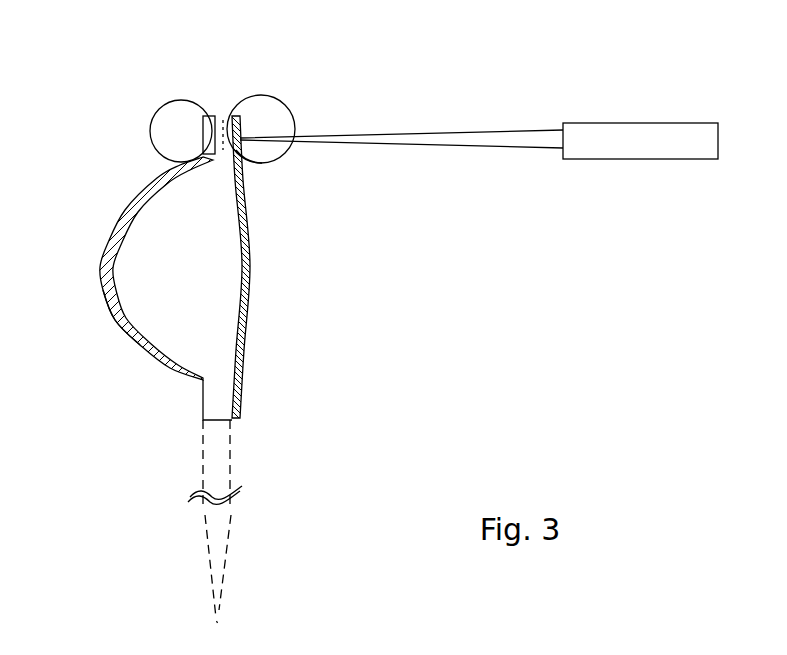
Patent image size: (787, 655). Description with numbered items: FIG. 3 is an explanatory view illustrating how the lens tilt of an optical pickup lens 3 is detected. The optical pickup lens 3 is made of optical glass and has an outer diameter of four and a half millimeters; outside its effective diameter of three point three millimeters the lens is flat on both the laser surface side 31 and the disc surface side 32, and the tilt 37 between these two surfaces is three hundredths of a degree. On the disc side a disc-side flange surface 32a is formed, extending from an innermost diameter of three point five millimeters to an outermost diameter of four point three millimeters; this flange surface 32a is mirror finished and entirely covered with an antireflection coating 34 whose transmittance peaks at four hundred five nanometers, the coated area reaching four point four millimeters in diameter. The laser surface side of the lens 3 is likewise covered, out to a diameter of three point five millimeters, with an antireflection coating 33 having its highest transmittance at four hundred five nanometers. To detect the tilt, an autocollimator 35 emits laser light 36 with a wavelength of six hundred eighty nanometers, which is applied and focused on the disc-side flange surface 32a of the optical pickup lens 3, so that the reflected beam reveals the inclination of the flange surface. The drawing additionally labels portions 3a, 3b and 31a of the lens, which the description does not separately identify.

The optical pickup lens 3 is at (258, 79).
The balloon membrane 3a is at (104, 270).
The catheter shaft wall 3b is at (245, 268).
The laser surface side 31 is at (152, 126).
The first balloon attachment 31a is at (203, 130).
The disc surface side 32 is at (282, 108).
The disc-side flange surface 32a is at (252, 163).
The antireflection coating 33 is at (121, 321).
The antireflection coating 34 is at (245, 359).
The autocollimator 35 is at (675, 143).
The laser light 36 is at (457, 138).
The tilt 37 is at (218, 555).